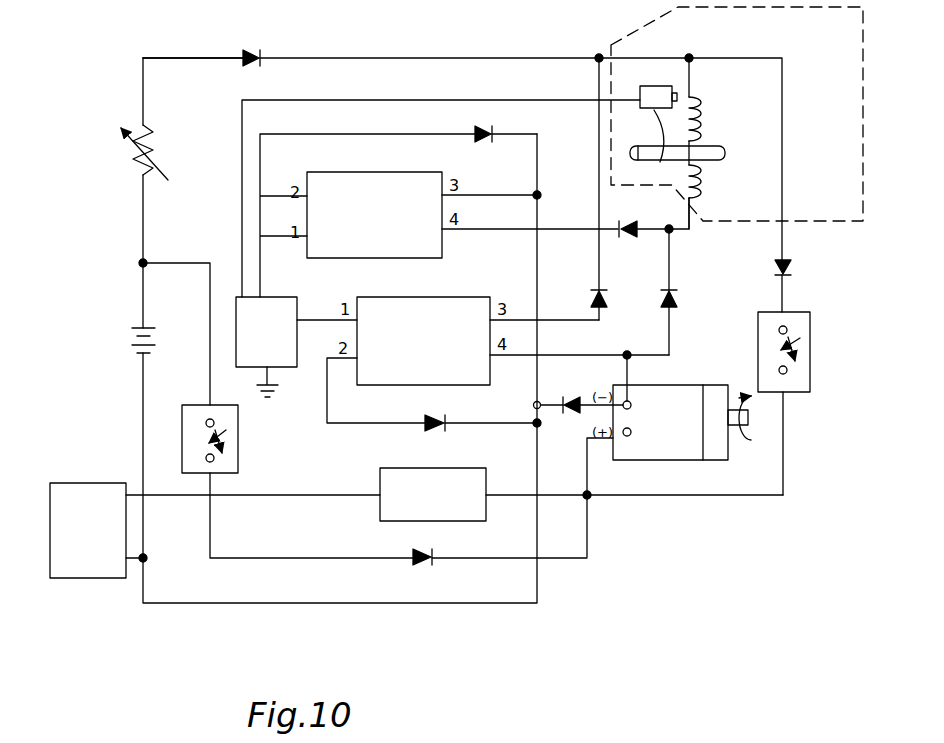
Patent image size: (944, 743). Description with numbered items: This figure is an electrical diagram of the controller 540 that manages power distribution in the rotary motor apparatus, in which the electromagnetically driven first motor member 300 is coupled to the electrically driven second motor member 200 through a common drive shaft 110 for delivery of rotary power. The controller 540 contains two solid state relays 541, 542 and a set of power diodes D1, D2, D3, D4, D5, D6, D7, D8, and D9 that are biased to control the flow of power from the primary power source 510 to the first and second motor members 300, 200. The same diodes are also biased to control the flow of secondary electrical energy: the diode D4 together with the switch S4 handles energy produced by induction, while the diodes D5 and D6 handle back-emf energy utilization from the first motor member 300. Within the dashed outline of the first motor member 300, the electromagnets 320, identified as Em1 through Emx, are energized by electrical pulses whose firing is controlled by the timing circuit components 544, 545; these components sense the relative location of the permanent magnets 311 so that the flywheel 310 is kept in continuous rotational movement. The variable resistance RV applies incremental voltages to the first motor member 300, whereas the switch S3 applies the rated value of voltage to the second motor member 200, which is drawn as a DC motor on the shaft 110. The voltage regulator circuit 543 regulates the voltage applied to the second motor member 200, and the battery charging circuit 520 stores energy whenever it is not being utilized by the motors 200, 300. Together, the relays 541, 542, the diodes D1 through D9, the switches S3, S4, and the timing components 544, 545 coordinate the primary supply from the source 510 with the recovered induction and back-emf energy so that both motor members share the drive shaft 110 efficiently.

The controller 540 is at (388, 46).
The solid state relay 541 is at (355, 172).
The solid state relay 542 is at (435, 297).
The voltage regulator circuit 543 is at (447, 468).
The timing circuit component 544 is at (650, 86).
The timing circuit component 545 is at (272, 297).
The primary power source 510 is at (130, 342).
The battery charging circuit 520 is at (75, 483).
The first motor member 300 is at (828, 46).
The electromagnets 320 is at (737, 156).
The flywheel 310 is at (655, 170).
The permanent magnets 311 is at (633, 85).
The common drive shaft 110 is at (748, 418).
The second motor member 200 is at (651, 462).
The power diode D1 is at (226, 46).
The power diode D2 is at (488, 142).
The power diode D3 is at (626, 224).
The power diode D4 is at (793, 268).
The power diode D5 is at (606, 299).
The power diode D6 is at (676, 300).
The power diode D7 is at (567, 398).
The power diode D8 is at (447, 423).
The power diode D9 is at (414, 564).
The variable resistance RV is at (115, 152).
The switch S3 is at (238, 442).
The switch S4 is at (810, 345).
The electromagnet Em1 is at (725, 119).
The electromagnet Emx is at (725, 169).